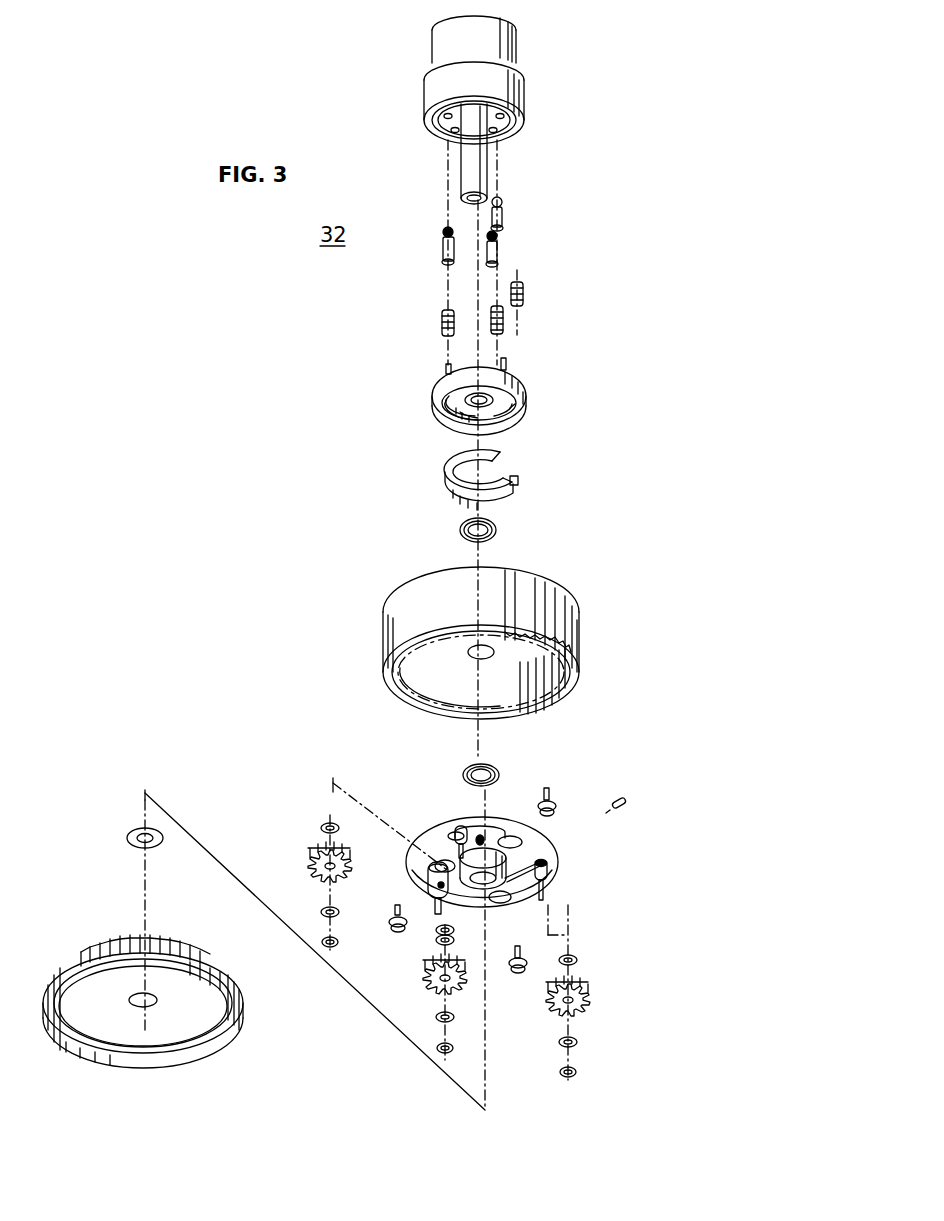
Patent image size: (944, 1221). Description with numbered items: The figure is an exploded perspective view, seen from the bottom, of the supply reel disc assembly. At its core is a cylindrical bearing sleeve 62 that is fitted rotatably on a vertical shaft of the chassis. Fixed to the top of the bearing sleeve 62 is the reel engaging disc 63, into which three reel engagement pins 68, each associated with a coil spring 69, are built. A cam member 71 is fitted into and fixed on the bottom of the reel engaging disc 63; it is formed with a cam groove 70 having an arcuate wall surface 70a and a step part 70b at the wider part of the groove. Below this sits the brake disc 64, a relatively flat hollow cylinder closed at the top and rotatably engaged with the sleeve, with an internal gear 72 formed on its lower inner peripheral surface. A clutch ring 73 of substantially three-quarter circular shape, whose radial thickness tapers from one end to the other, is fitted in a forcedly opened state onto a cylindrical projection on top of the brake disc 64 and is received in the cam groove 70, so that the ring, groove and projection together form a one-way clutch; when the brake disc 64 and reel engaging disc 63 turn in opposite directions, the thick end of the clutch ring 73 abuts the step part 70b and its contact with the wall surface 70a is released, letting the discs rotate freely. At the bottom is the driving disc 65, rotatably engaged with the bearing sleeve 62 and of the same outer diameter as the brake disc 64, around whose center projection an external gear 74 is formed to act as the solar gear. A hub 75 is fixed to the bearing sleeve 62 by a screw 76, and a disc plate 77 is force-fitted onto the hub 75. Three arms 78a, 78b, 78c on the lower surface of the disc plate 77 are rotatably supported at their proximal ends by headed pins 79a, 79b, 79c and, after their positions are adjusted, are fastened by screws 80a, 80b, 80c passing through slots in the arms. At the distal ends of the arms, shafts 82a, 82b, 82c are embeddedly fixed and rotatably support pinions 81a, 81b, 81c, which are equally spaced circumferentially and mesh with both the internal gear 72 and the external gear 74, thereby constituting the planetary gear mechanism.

The bearing sleeve 62 is at (459, 168).
The reel engaging disc 63 is at (426, 102).
The brake disc 64 is at (398, 607).
The driving disc 65 is at (70, 946).
The reel engagement pins 68 is at (440, 245).
The coil springs 69 is at (440, 318).
The cam groove 70 is at (440, 420).
The arcuate wall surface 70a is at (463, 433).
The step part 70b is at (514, 415).
The cam member 71 is at (435, 387).
The internal gear 72 is at (543, 689).
The clutch ring 73 is at (518, 482).
The external gear 74 is at (130, 919).
The hub 75 is at (484, 890).
The screw 76 is at (621, 800).
The disc plate 77 is at (496, 824).
The arm 78a is at (424, 887).
The arm 78b is at (478, 840).
The arm 78c is at (548, 857).
The pin 79a is at (442, 870).
The pin 79b is at (520, 843).
The pin 79c is at (506, 909).
The screw 80a is at (392, 910).
The screw 80b is at (556, 796).
The screw 80c is at (520, 960).
The pinion 81a is at (432, 983).
The pinion 81b is at (318, 856).
The pinion 81c is at (585, 991).
The shaft 82a is at (438, 918).
The shaft 82b is at (455, 831).
The shaft 82c is at (550, 887).